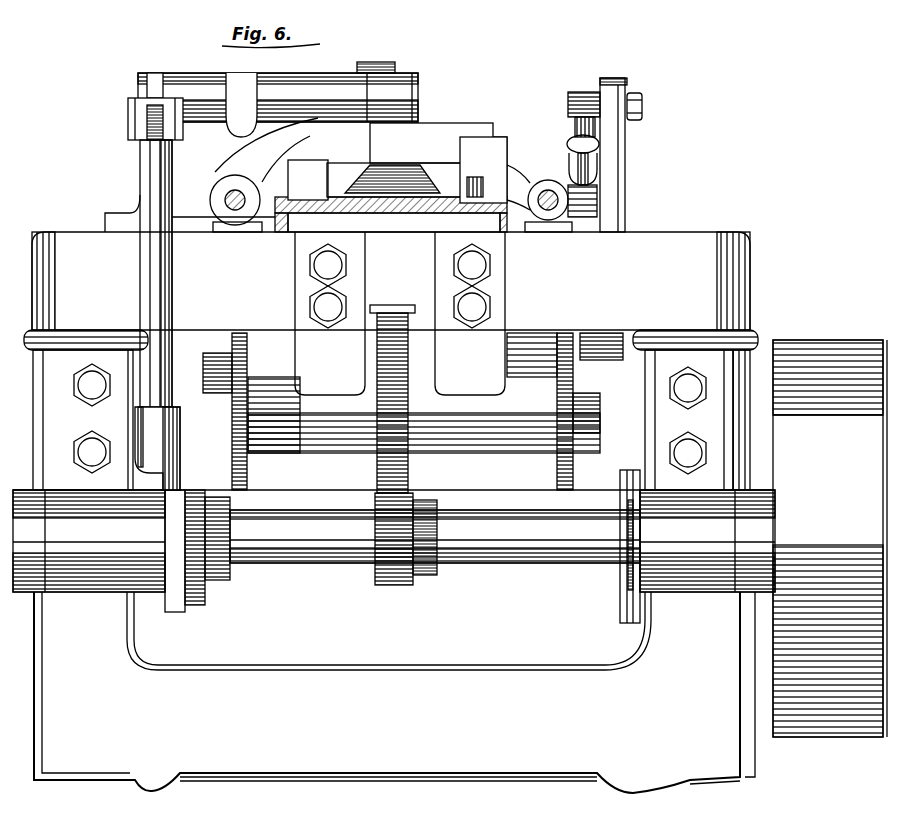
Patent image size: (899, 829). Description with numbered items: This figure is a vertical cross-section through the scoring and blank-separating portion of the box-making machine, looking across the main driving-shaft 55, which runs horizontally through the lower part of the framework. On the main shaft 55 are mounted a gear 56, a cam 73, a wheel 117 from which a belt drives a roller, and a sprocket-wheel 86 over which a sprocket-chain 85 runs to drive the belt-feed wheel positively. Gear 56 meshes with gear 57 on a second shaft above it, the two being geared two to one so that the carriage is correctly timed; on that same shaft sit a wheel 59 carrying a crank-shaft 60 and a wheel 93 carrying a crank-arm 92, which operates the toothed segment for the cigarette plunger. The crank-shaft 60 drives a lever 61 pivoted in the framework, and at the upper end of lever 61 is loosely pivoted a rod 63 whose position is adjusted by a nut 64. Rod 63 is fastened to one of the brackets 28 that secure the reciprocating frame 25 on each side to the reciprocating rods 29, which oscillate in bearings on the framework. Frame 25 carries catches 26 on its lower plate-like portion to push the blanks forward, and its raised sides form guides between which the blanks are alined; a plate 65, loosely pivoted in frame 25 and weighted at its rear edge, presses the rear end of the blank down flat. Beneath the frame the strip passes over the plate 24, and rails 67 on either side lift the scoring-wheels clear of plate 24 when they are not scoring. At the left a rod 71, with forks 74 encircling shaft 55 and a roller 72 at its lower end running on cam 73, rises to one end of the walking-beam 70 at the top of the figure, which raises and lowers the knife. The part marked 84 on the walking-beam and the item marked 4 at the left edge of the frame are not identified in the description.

The frame 4 is at (4, 346).
The plate 24 is at (391, 215).
The reciprocating frame 25 is at (473, 170).
The catches 26 is at (345, 192).
The brackets 28 is at (264, 184).
The reciprocating rods 29 is at (235, 200).
The main driving-shaft 55 is at (435, 536).
The gear 56 is at (393, 584).
The gear 57 is at (378, 470).
The wheel 59 is at (557, 472).
The crank-shaft 60 is at (611, 358).
The lever 61 is at (626, 178).
The rod 63 is at (580, 175).
The nut 64 is at (576, 142).
The plate 65 is at (440, 185).
The rails 67 is at (308, 196).
The walking-beam 70 is at (385, 63).
The rod 71 is at (172, 272).
The roller 72 is at (197, 455).
The cam 73 is at (203, 598).
The forks 74 is at (175, 606).
The bar 84 is at (240, 90).
The sprocket-chain 85 is at (624, 618).
The sprocket-wheel 86 is at (628, 566).
The crank-arm 92 is at (212, 365).
The wheel 93 is at (248, 472).
The wheel 117 is at (220, 530).